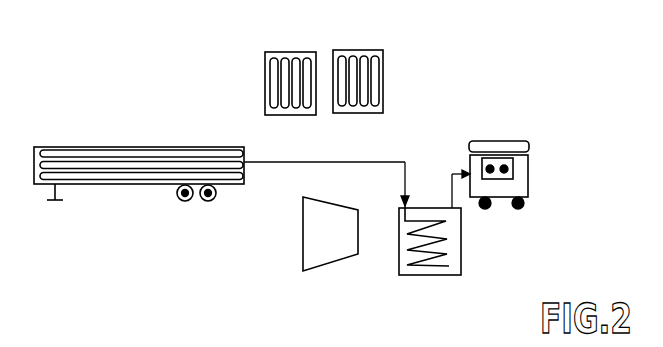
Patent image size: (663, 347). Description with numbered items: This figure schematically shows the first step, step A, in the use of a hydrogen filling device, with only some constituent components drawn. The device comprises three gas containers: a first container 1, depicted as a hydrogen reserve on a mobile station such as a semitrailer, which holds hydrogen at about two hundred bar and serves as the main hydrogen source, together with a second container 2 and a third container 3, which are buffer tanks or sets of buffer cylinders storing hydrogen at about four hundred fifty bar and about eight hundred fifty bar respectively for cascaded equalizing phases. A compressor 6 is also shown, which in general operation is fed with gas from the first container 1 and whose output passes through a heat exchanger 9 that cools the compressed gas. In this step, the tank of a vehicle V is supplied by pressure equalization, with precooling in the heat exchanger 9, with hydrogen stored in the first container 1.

The first container 1 is at (142, 147).
The second container 2 is at (293, 52).
The third container 3 is at (352, 50).
The compressor 6 is at (312, 241).
The heat exchanger 9 is at (461, 237).
The vehicle V is at (525, 183).